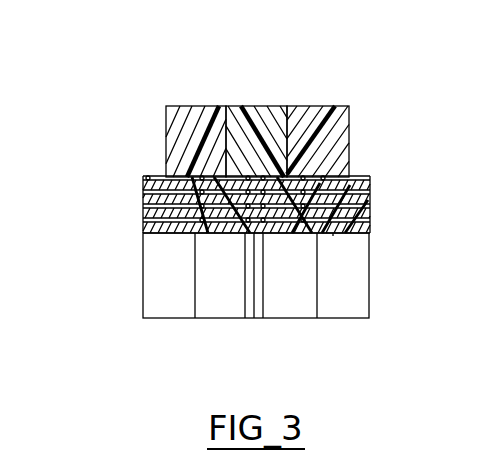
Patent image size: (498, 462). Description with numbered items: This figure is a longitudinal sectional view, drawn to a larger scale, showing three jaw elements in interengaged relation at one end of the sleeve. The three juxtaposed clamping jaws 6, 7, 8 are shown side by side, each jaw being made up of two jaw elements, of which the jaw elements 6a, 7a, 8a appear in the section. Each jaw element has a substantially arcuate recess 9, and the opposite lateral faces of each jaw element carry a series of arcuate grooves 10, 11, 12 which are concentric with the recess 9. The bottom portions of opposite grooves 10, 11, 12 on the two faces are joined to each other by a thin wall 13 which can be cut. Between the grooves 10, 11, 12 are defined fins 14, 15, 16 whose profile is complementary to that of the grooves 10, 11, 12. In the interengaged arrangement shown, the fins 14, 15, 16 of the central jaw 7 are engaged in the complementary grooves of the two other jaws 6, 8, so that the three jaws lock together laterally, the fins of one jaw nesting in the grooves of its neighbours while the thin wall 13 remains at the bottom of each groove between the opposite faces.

The clamping jaw 6 is at (178, 96).
The central clamping jaw 7 is at (263, 94).
The clamping jaw 8 is at (324, 96).
The jaw element 6a is at (198, 232).
The jaw element 7a is at (248, 232).
The jaw element 8a is at (333, 237).
The arcuate recess 9 is at (192, 298).
The arcuate groove 10 is at (143, 187).
The arcuate groove 11 is at (143, 203).
The arcuate groove 12 is at (143, 225).
The thin wall 13 is at (188, 230).
The fin 14 is at (153, 177).
The fin 15 is at (143, 199).
The fin 16 is at (143, 217).